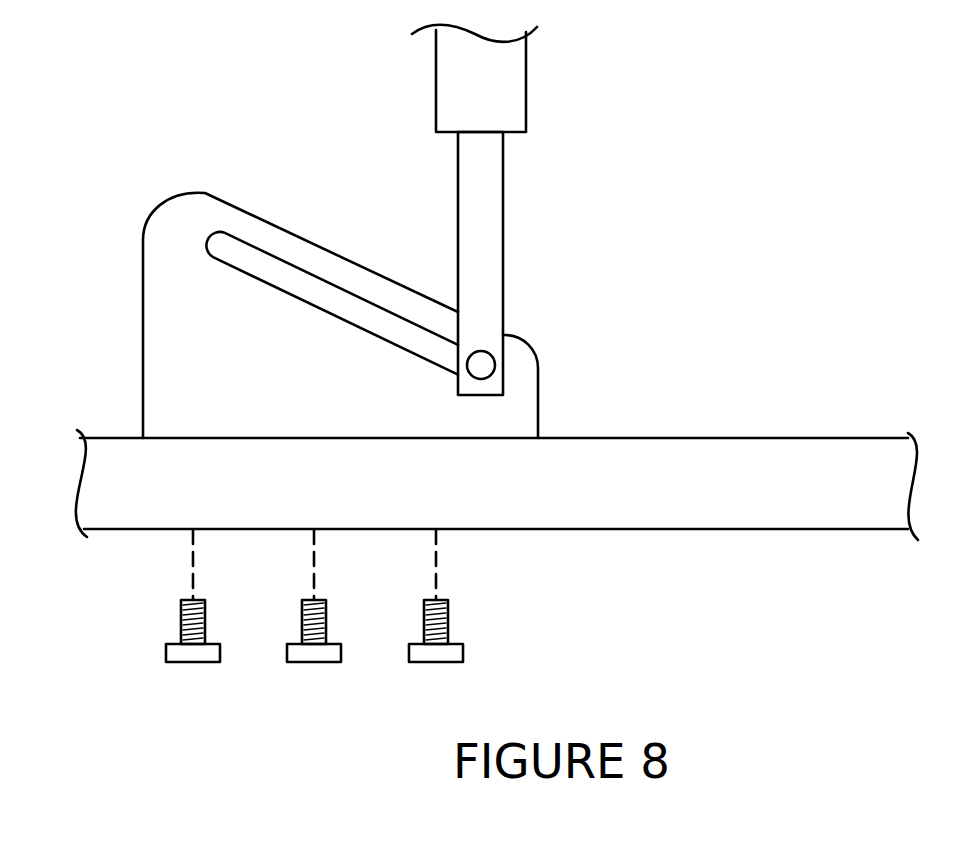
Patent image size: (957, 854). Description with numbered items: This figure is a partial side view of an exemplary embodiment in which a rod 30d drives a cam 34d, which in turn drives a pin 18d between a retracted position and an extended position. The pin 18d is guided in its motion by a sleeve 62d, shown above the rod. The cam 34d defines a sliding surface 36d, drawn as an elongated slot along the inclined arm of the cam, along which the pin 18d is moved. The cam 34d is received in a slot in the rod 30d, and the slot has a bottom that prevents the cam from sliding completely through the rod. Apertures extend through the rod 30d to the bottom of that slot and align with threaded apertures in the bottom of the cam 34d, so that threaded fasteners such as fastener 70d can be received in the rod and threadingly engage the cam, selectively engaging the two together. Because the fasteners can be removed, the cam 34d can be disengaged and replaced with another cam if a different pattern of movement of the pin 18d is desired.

The sleeve 62d is at (467, 80).
The pin 18d is at (490, 205).
The cam 34d is at (185, 212).
The sliding surface 36d is at (287, 290).
The rod 30d is at (842, 507).
The fastener 70d is at (175, 642).